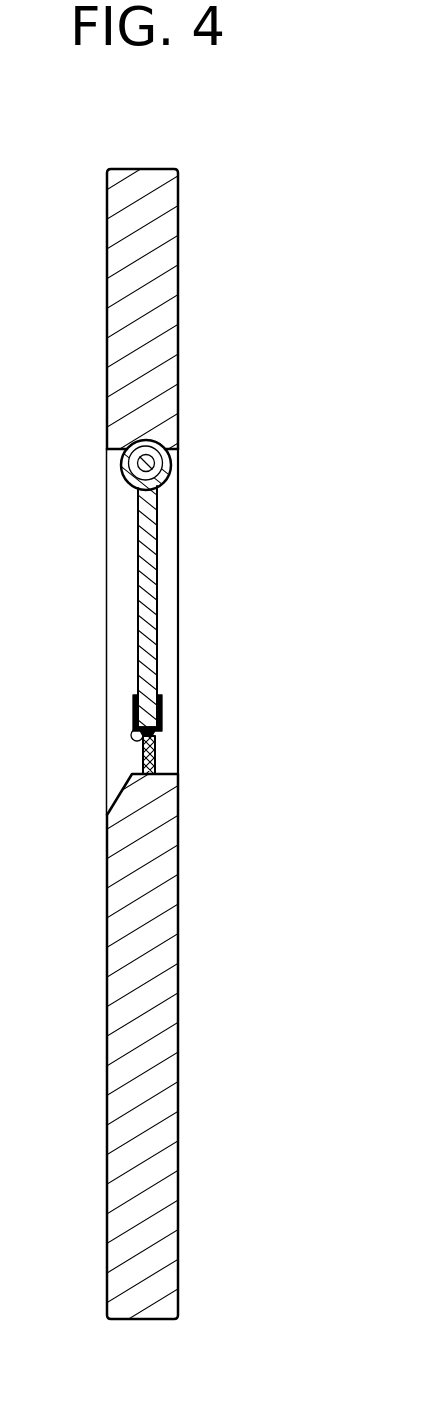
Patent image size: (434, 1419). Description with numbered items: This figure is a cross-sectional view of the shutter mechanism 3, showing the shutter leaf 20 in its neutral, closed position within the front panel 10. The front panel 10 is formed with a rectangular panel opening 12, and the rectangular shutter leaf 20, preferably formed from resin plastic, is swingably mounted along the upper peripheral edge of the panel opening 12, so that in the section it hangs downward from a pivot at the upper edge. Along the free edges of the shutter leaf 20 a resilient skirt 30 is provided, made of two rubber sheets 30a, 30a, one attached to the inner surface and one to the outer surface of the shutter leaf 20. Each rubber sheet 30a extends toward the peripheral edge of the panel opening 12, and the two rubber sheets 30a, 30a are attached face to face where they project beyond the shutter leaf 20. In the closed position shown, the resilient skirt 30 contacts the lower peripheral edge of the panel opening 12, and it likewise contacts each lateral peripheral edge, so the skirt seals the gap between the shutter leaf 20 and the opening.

The shutter mechanism 3 is at (227, 428).
The front panel 10 is at (118, 257).
The panel opening 12 is at (125, 638).
The shutter leaf 20 is at (150, 558).
The resilient skirt 30 is at (227, 737).
The rubber sheet 30a is at (161, 711).